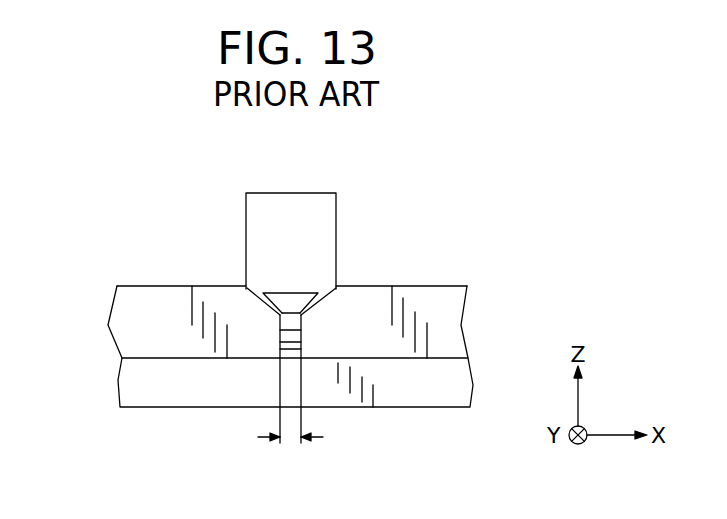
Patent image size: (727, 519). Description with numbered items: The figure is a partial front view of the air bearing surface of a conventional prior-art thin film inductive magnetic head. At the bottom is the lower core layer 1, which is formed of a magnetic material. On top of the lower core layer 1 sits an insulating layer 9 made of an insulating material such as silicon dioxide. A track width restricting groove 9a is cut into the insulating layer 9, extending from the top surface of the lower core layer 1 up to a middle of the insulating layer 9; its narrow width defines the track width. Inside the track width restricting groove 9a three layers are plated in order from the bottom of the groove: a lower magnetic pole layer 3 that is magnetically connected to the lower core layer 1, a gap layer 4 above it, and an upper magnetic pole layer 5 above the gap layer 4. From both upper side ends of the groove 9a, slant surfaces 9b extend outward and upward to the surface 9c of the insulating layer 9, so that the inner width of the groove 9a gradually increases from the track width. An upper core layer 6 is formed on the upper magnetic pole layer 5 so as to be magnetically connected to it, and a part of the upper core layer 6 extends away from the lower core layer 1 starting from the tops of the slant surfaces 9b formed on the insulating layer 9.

The lower core layer 1 is at (438, 385).
The lower magnetic pole layer 3 is at (302, 347).
The gap layer 4 is at (304, 330).
The upper magnetic pole layer 5 is at (288, 308).
The upper core layer 6 is at (268, 213).
The insulating layer 9 is at (143, 327).
The track width restricting groove 9a is at (279, 329).
The slant surfaces 9b is at (254, 288).
The surface of the insulating layer 9c is at (173, 285).